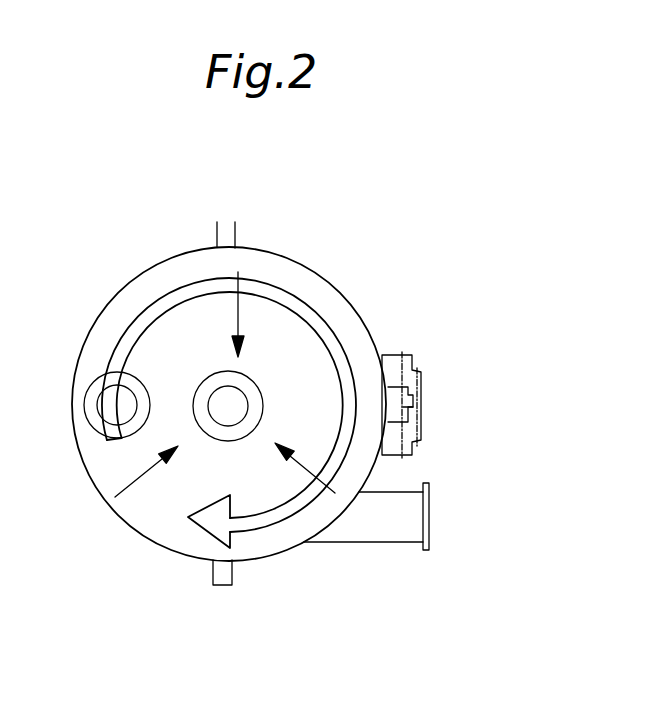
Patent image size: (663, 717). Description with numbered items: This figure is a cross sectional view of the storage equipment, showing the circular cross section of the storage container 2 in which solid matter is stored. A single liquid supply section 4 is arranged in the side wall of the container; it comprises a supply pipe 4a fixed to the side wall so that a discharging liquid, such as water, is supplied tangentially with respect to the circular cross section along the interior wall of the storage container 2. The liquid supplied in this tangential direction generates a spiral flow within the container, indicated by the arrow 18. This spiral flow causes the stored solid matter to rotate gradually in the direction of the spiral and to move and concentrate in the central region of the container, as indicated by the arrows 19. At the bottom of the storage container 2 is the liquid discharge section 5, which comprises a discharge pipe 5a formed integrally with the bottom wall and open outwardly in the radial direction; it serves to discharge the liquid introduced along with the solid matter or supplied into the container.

The storage container 2 is at (342, 292).
The arrow indicating spiral flow 18 is at (342, 347).
The arrow indicating solid matter movement 19 is at (240, 282).
The liquid discharge section 5 is at (440, 377).
The discharge pipe 5a is at (408, 408).
The liquid supply section 4 is at (365, 560).
The supply pipe 4a is at (408, 512).